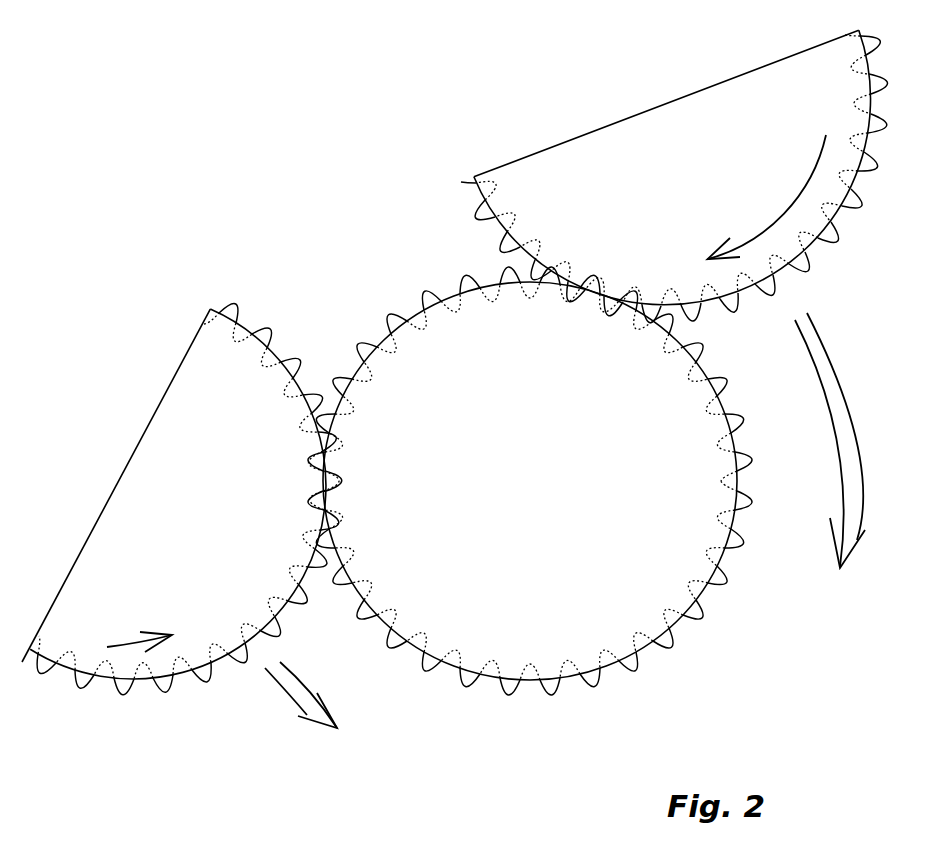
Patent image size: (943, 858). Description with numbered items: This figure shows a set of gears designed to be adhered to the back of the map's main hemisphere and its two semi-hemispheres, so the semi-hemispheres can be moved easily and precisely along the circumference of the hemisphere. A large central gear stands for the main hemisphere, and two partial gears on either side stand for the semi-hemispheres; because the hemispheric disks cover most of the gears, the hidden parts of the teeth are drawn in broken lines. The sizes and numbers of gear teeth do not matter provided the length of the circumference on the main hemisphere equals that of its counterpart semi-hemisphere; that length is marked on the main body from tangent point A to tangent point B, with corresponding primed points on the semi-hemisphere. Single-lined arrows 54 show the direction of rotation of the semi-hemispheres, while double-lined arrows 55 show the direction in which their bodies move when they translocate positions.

The single-lined arrow 54 is at (792, 200).
The double-lined arrow 55 is at (838, 370).
The tangent point A is at (630, 258).
The tangent point B is at (672, 633).